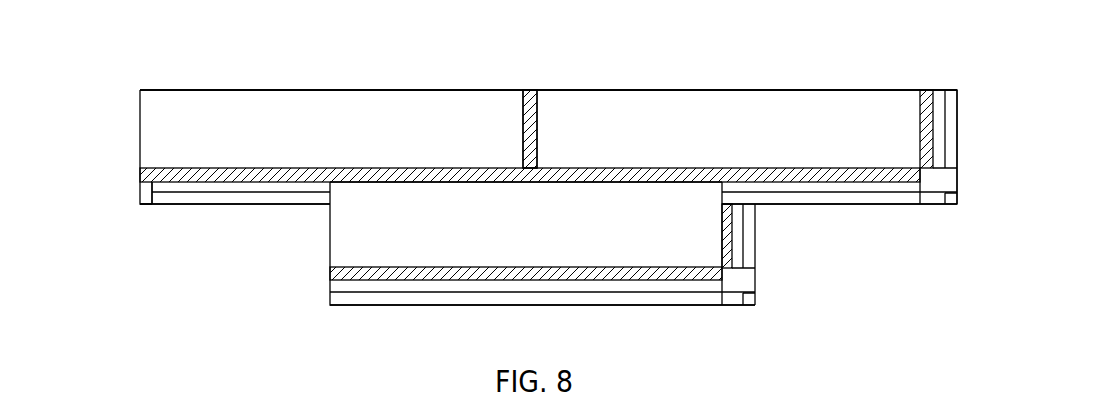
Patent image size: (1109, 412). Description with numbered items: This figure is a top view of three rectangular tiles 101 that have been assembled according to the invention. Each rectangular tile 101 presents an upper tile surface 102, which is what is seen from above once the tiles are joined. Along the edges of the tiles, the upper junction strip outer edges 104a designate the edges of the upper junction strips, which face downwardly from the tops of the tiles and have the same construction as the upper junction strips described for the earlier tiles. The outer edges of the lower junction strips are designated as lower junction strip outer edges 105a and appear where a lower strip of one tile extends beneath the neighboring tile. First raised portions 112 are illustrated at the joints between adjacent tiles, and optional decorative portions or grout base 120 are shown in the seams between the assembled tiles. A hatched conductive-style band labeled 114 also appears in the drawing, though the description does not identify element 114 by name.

The rectangular tile 101 is at (340, 147).
The upper tile surface 102 is at (395, 104).
The upper junction strip outer edge 104a is at (184, 90).
The lower junction strip outer edge 105a is at (195, 205).
The first raised portion 112 is at (965, 107).
The conductive layer 114 is at (140, 182).
The decorative portion or grout base 120 is at (530, 90).